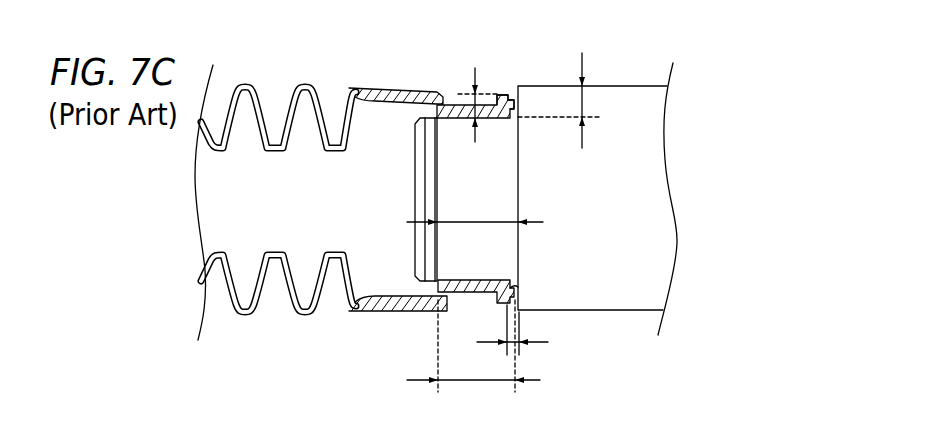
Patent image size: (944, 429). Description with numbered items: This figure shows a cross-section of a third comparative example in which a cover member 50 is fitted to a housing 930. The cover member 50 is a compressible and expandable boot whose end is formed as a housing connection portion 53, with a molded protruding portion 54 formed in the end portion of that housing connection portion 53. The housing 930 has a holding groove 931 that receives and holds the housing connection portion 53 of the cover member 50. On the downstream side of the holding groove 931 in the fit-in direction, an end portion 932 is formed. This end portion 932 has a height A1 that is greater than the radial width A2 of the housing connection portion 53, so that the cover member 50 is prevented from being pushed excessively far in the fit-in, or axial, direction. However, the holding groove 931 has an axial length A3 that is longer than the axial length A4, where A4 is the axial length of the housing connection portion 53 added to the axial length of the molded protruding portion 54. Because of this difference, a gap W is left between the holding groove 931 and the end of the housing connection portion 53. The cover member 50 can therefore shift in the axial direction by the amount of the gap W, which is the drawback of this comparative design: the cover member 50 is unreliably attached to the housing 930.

The cover member 50 is at (276, 324).
The housing connection portion 53 is at (450, 86).
The molded protruding portion 54 is at (520, 101).
The housing 930 is at (630, 72).
The holding groove 931 is at (462, 251).
The end portion 932 is at (513, 290).
The height A1 is at (559, 114).
The radial width A2 is at (477, 121).
The axial length A3 is at (475, 212).
The axial length A4 is at (473, 355).
The gap W is at (525, 331).